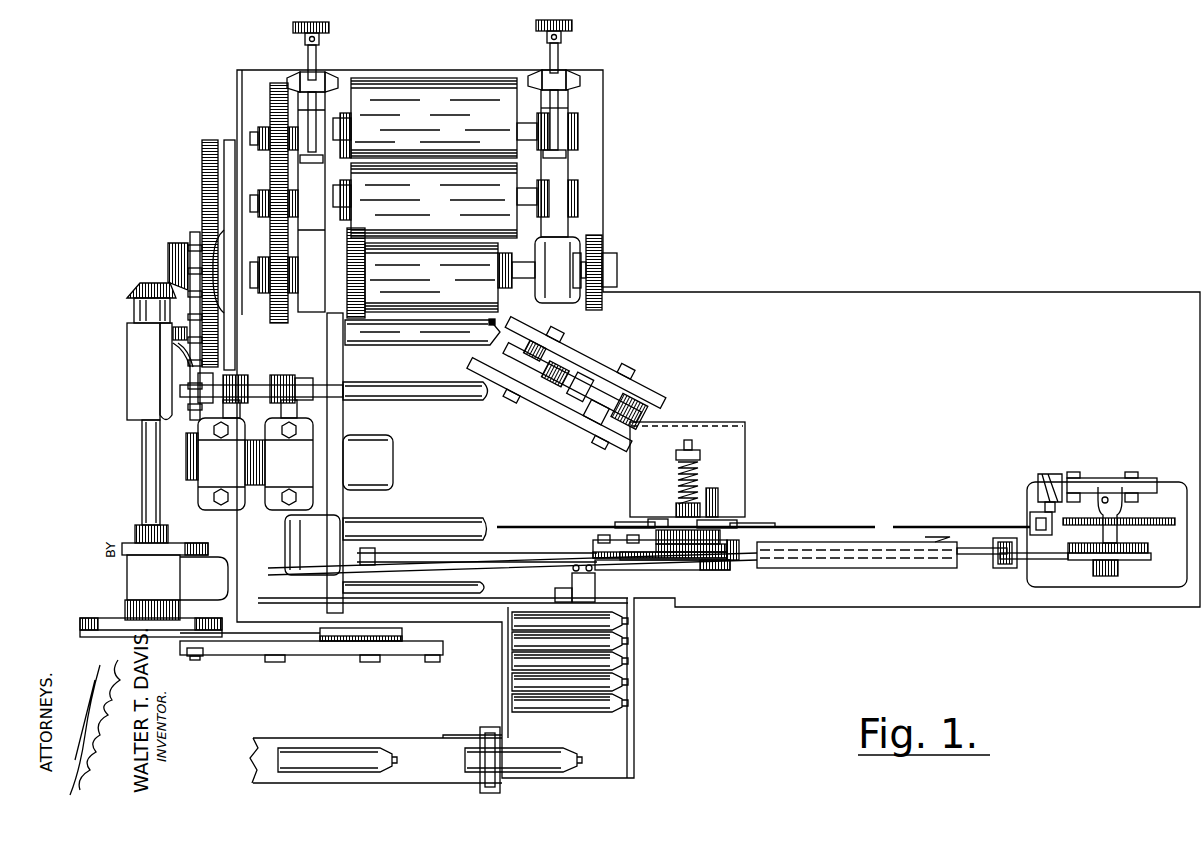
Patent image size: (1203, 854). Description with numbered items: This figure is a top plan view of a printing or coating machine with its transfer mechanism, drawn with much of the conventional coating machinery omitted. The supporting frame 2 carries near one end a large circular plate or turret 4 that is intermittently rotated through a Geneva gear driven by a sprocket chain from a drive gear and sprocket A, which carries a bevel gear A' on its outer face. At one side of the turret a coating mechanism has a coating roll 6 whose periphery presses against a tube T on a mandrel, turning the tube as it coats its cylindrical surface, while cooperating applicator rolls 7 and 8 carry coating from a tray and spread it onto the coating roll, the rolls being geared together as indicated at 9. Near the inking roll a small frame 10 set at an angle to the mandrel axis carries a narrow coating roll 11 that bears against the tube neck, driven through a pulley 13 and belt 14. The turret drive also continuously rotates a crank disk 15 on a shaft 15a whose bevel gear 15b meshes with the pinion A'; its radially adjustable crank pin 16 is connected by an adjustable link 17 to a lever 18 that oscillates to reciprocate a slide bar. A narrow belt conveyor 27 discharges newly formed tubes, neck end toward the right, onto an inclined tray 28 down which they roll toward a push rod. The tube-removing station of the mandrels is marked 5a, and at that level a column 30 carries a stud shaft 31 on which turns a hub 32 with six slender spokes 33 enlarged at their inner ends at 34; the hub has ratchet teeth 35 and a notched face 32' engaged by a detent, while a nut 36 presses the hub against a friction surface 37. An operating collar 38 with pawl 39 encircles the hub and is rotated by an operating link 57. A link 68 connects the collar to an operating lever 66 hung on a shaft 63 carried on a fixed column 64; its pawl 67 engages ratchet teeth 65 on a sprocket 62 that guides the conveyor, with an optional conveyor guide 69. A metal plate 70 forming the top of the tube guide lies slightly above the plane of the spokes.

The supporting frame 2 is at (482, 621).
The turret 4 is at (343, 362).
The tube-removing position 5a is at (410, 522).
The coating roll 6 is at (503, 310).
The applicator roll 7 is at (515, 185).
The applicator roll 8 is at (484, 88).
The gearing 9 is at (272, 105).
The small frame 10 is at (597, 340).
The narrow coating roll 11 is at (584, 360).
The pulley 13 is at (598, 385).
The belt 14 is at (541, 420).
The crank disk 15 is at (112, 622).
The shaft 15a is at (143, 474).
The bevel gear 15b is at (138, 288).
The crank pin 16 is at (196, 652).
The adjustable link 17 is at (312, 650).
The lever 18 is at (402, 636).
The belt conveyor 27 is at (340, 752).
The inclined tray 28 is at (617, 748).
The column 30 is at (745, 436).
The stud shaft 31 is at (718, 492).
The hub 32 is at (739, 505).
The hub face 32' is at (624, 498).
The spokes 33 is at (812, 525).
The enlarged inner ends 34 is at (630, 525).
The ratchet teeth 35 is at (595, 540).
The nut 36 is at (692, 450).
The friction surface 37 is at (670, 528).
The operating yoke or collar 38 is at (672, 548).
The pawl 39 is at (735, 542).
The operating link 57 is at (512, 553).
The sprocket 62 is at (1150, 525).
The shaft 63 is at (1104, 578).
The fixed column 64 is at (1166, 488).
The ratchet teeth 65 is at (1068, 557).
The operating lever 66 is at (1024, 560).
The pawl 67 is at (1148, 550).
The link 68 is at (970, 558).
The conveyor guide 69 is at (1038, 510).
The metal plate 70 is at (860, 565).
The drive gear and sprocket A is at (161, 259).
The bevel gear A' is at (184, 308).
The tube T is at (425, 334).